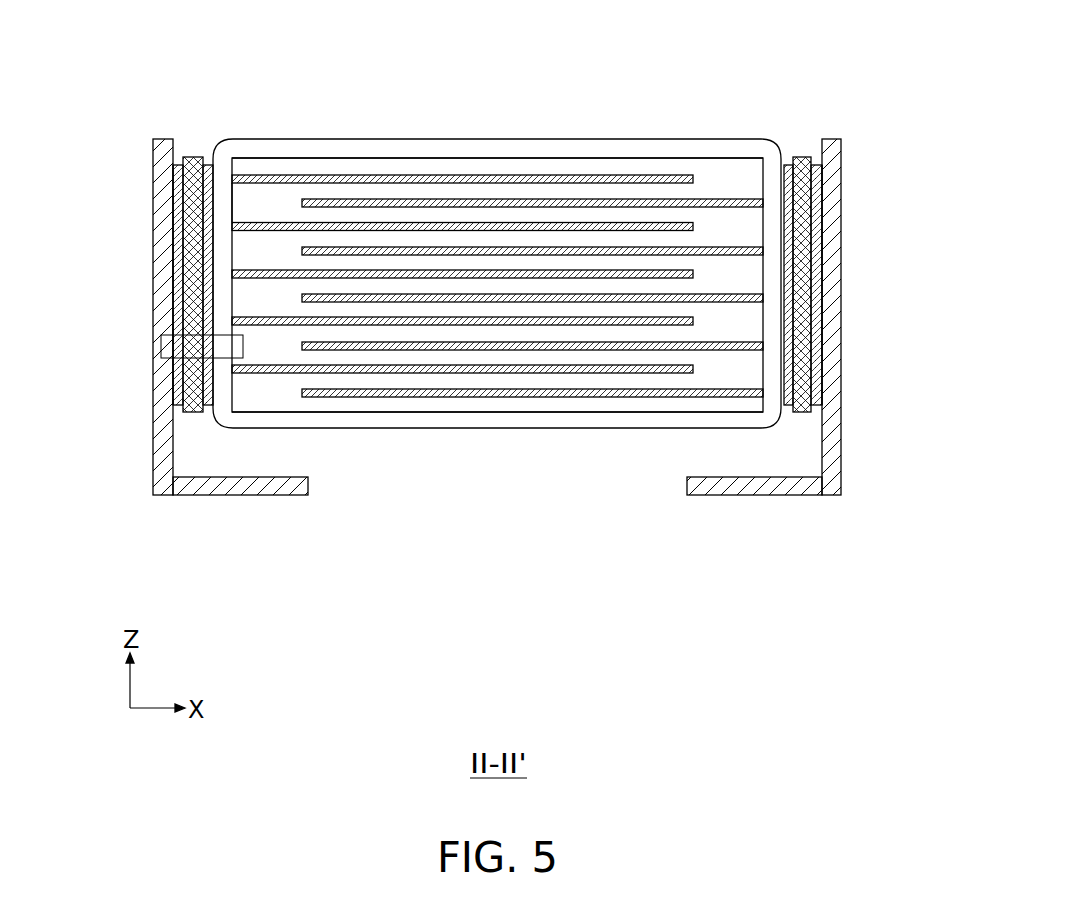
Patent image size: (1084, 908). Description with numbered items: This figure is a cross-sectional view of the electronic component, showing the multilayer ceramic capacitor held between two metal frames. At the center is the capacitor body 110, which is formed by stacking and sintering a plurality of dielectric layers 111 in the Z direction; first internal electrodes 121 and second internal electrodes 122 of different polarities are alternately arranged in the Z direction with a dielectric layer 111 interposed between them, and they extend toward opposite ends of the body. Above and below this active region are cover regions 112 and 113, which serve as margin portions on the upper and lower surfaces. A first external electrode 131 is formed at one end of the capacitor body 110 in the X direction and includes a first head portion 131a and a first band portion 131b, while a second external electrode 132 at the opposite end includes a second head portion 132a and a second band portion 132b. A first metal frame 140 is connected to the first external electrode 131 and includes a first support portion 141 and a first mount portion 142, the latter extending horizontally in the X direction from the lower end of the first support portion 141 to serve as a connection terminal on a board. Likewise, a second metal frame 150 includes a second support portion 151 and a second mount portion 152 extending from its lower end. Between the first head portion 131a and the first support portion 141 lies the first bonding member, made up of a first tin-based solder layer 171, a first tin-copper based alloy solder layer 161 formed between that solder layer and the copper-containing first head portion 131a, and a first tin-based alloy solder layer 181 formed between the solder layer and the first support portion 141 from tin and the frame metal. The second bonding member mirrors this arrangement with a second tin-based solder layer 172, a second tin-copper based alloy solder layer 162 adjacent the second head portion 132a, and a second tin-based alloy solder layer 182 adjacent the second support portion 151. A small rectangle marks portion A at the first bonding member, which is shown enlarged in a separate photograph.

The capacitor body 110 is at (502, 158).
The dielectric layer 111 is at (567, 217).
The cover region 112 is at (429, 168).
The cover region 113 is at (529, 412).
The first internal electrode 121 is at (360, 176).
The second internal electrode 122 is at (623, 200).
The first external electrode 131 is at (310, 77).
The first head portion 131a is at (190, 156).
The first band portion 131b is at (280, 141).
The second external electrode 132 is at (838, 77).
The second head portion 132a is at (804, 156).
The second band portion 132b is at (712, 141).
The first metal frame 140 is at (255, 555).
The first support portion 141 is at (163, 447).
The first mount portion 142 is at (227, 488).
The second metal frame 150 is at (893, 557).
The second support portion 151 is at (833, 446).
The second mount portion 152 is at (770, 495).
The first tin-copper based alloy solder layer 161 is at (180, 230).
The second tin-copper based alloy solder layer 162 is at (818, 228).
The first tin-based solder layer 171 is at (190, 278).
The second tin-based solder layer 172 is at (815, 278).
The first tin-based alloy solder layer 181 is at (172, 321).
The second tin-based alloy solder layer 182 is at (822, 321).
The portion A is at (153, 347).